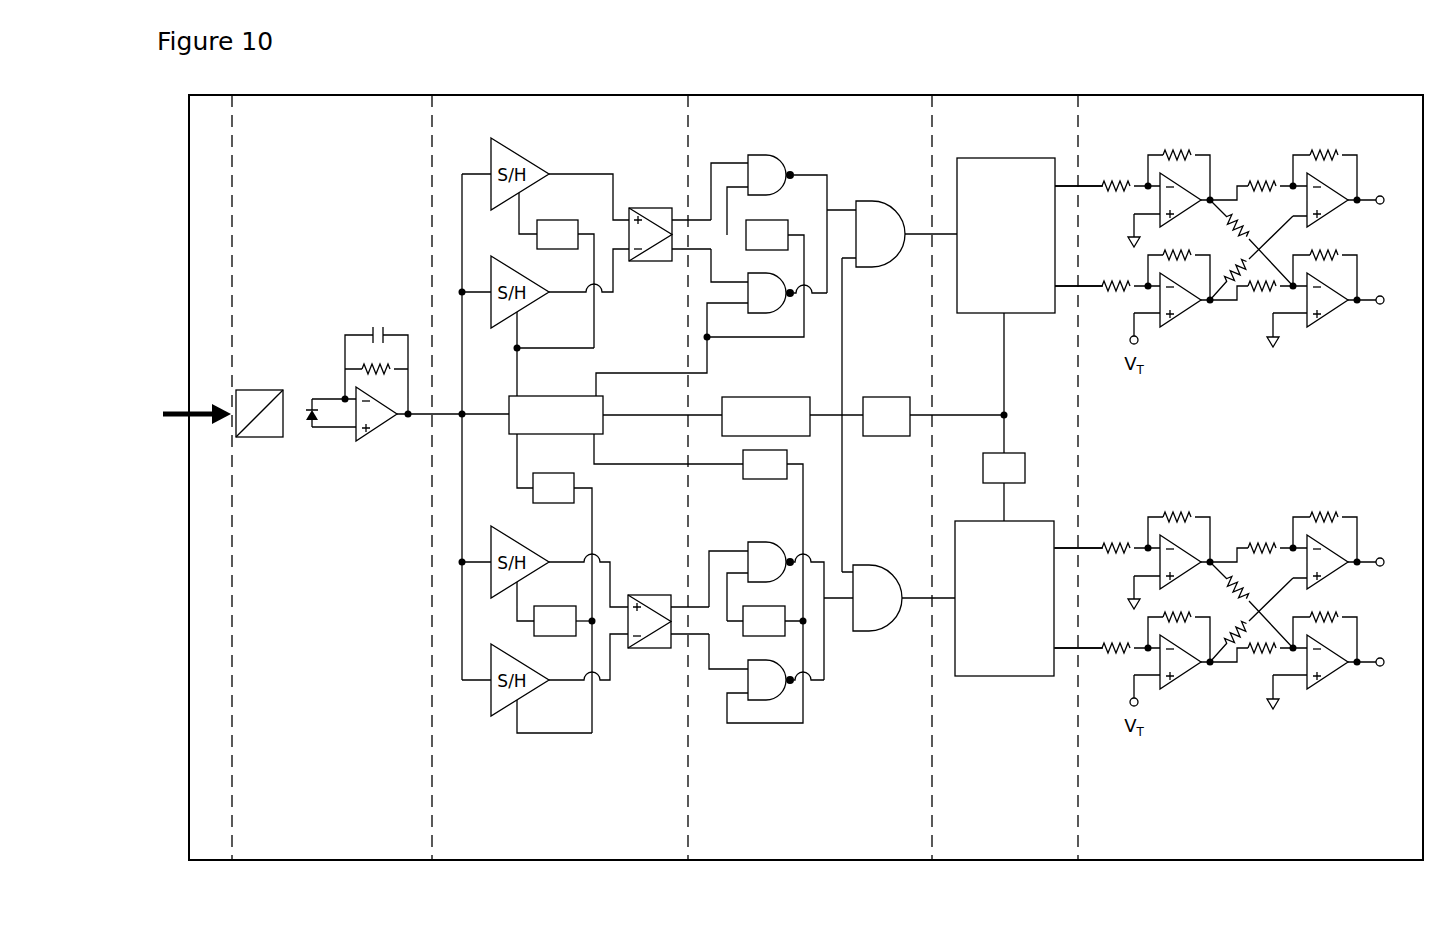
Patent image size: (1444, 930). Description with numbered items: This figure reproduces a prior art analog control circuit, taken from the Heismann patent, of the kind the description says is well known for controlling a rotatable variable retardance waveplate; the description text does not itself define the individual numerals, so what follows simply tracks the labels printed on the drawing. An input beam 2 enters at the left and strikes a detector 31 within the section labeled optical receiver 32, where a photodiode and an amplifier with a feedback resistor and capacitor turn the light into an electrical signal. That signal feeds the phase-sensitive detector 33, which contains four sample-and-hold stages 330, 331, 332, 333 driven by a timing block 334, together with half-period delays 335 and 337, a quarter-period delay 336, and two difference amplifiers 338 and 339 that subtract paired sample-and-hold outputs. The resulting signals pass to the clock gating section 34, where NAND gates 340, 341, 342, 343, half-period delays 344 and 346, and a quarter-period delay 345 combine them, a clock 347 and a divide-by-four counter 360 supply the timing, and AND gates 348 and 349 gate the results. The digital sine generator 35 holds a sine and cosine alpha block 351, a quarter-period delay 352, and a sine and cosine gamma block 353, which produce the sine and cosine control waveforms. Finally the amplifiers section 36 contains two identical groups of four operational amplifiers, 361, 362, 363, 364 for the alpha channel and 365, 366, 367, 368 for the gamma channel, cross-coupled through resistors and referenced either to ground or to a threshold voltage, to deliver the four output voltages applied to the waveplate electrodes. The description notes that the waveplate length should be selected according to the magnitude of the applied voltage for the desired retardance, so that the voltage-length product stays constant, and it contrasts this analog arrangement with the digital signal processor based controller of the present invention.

The input light beam 2 is at (195, 408).
The photodetector 31 is at (260, 390).
The optical receiver 32 is at (336, 590).
The phase-sensitive detector 33 is at (601, 485).
The clock gating 34 is at (853, 489).
The digital sine generator 35 is at (1025, 489).
The amplifiers 36 is at (1234, 488).
The sample-and-hold circuit 330 is at (516, 152).
The sample-and-hold circuit 331 is at (530, 305).
The sample-and-hold circuit 332 is at (510, 539).
The sample-and-hold circuit 333 is at (500, 710).
The timing circuit 334 is at (530, 396).
The T/2 delay 335 is at (547, 220).
The T/4 delay 336 is at (540, 473).
The T/2 delay 337 is at (540, 606).
The difference amplifier 338 is at (636, 208).
The difference amplifier 339 is at (636, 595).
The NAND gate 340 is at (765, 155).
The NAND gate 341 is at (758, 313).
The NAND gate 342 is at (752, 542).
The NAND gate 343 is at (758, 700).
The T/2 delay 344 is at (772, 220).
The T/4 delay 345 is at (750, 479).
The T/2 delay 346 is at (760, 636).
The clock 347 is at (740, 397).
The AND gate 348 is at (872, 202).
The AND gate 349 is at (869, 565).
The sine/cosine alpha generator 351 is at (985, 158).
The T/4 delay 352 is at (1018, 453).
The sine/cosine gamma generator 353 is at (1000, 676).
The divide-by-four counter 360 is at (868, 397).
The operational amplifier 361 is at (1182, 186).
The operational amplifier 362 is at (1178, 318).
The operational amplifier 363 is at (1332, 216).
The operational amplifier 364 is at (1324, 318).
The operational amplifier 365 is at (1182, 548).
The operational amplifier 366 is at (1332, 578).
The operational amplifier 367 is at (1178, 680).
The operational amplifier 368 is at (1324, 680).